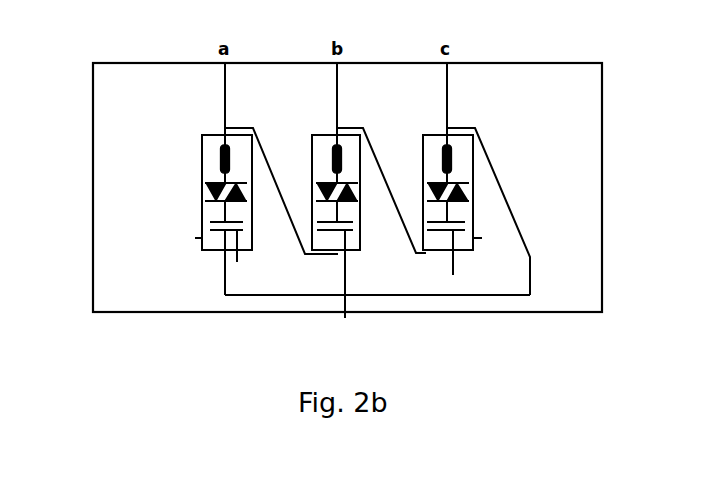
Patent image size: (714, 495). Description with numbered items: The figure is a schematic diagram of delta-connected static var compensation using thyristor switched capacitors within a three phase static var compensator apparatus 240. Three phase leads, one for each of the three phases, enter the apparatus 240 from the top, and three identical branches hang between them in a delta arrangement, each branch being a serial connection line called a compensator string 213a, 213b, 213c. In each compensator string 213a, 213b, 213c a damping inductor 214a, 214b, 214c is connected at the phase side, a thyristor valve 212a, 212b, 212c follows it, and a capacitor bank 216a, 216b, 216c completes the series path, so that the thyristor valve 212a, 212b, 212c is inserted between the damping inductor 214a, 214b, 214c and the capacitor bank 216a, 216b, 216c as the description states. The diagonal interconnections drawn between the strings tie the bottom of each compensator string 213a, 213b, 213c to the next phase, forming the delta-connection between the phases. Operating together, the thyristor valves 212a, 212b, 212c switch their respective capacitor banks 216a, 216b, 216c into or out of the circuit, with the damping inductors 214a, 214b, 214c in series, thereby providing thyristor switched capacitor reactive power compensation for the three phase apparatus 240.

The three phase static var compensator apparatus 240 is at (165, 63).
The thyristor valve 212a is at (214, 186).
The thyristor valve 212b is at (355, 197).
The thyristor valve 212c is at (466, 195).
The damping inductor 214a is at (222, 148).
The damping inductor 214b is at (334, 150).
The damping inductor 214c is at (444, 150).
The capacitor bank 216a is at (237, 262).
The capacitor bank 216b is at (345, 318).
The capacitor bank 216c is at (453, 275).
The compensator string 213a is at (196, 238).
The compensator string 213b is at (322, 254).
The compensator string 213c is at (480, 238).